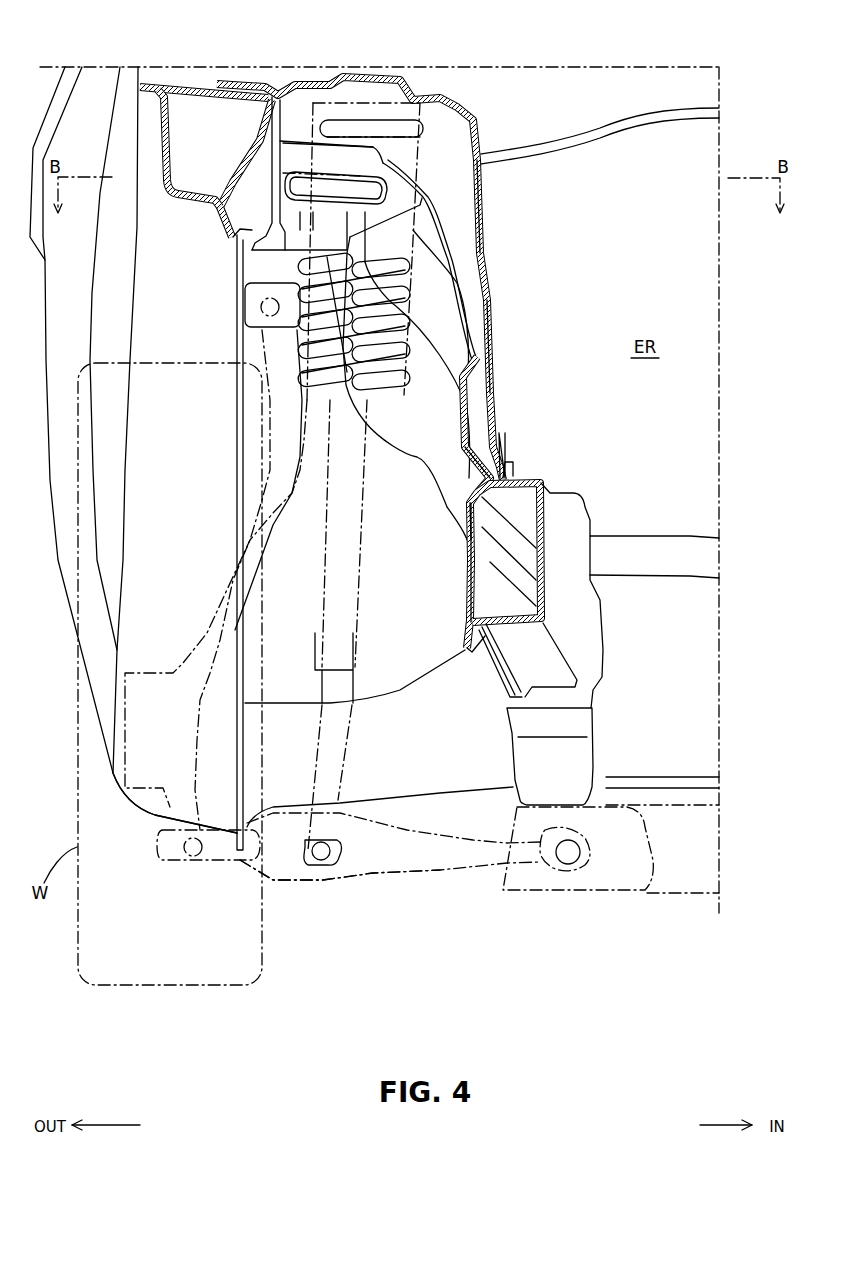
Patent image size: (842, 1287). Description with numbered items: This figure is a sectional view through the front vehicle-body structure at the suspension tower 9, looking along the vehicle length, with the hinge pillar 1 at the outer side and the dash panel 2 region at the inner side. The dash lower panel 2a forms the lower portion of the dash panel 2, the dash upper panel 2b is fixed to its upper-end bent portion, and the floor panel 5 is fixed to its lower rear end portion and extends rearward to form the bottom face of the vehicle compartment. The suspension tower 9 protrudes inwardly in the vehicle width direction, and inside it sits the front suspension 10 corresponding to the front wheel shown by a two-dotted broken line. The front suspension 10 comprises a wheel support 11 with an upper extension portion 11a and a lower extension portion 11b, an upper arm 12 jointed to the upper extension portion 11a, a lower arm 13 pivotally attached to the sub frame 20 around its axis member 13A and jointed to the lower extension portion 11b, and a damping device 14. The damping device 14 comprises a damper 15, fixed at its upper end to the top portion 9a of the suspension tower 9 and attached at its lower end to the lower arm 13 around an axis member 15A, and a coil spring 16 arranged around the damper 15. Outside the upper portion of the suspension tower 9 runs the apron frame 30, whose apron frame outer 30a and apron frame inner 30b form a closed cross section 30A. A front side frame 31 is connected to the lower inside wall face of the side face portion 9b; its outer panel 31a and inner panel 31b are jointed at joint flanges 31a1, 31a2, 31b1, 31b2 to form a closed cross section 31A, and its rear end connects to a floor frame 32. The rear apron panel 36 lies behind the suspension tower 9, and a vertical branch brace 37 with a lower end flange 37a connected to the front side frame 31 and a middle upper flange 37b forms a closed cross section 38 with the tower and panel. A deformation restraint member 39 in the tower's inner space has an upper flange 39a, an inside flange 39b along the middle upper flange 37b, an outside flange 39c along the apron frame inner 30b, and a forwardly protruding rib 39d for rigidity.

The hinge pillar 1 is at (145, 323).
The dash panel 2 is at (693, 336).
The dash lower panel 2a is at (700, 383).
The dash upper panel 2b is at (638, 87).
The floor panel 5 is at (698, 672).
The suspension tower 9 is at (389, 256).
The top portion 9a is at (388, 80).
The side face portion 9b is at (483, 230).
The front suspension 10 is at (464, 894).
The wheel support 11 is at (146, 794).
The upper extension portion 11a is at (213, 603).
The lower extension portion 11b is at (163, 815).
The upper arm 12 is at (253, 278).
The lower arm 13 is at (400, 878).
The axis member 13A is at (568, 862).
The damping device 14 is at (409, 320).
The damper 15 is at (354, 723).
The axis member 15A is at (317, 857).
The coil spring 16 is at (403, 357).
The sub frame 20 is at (690, 893).
The apron frame 30 is at (202, 143).
The apron frame outer 30a is at (163, 177).
The closed cross section 30A is at (183, 149).
The apron frame inner 30b is at (192, 84).
The front side frame 31 is at (531, 616).
The closed cross section 31A is at (486, 589).
The outer panel 31a is at (466, 571).
The joint flange 31a1 is at (507, 450).
The joint flange 31a2 is at (461, 643).
The inner panel 31b is at (568, 570).
The joint flange 31b1 is at (512, 468).
The joint flange 31b2 is at (488, 655).
The floor frame 32 is at (597, 676).
The rear apron panel 36 is at (430, 470).
The vertical branch brace 37 is at (460, 418).
The lower end flange 37a is at (472, 522).
The middle upper flange 37b is at (463, 272).
The closed cross section 38 is at (481, 430).
The deformation restraint member 39 is at (354, 248).
The upper flange 39a is at (357, 157).
The inside flange 39b is at (405, 199).
The outside flange 39c is at (283, 140).
The rib 39d is at (366, 183).